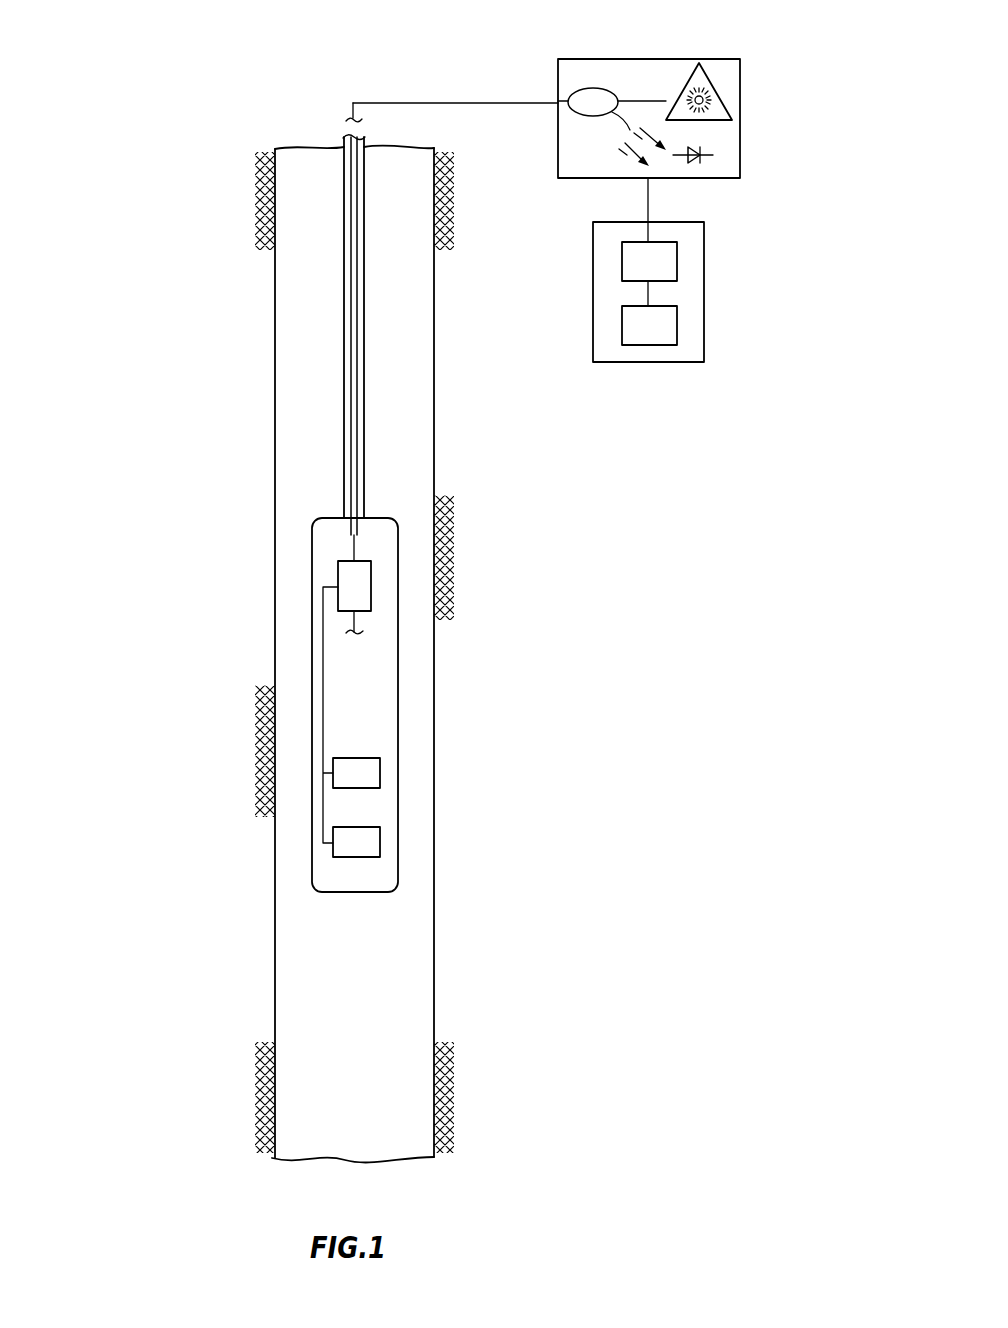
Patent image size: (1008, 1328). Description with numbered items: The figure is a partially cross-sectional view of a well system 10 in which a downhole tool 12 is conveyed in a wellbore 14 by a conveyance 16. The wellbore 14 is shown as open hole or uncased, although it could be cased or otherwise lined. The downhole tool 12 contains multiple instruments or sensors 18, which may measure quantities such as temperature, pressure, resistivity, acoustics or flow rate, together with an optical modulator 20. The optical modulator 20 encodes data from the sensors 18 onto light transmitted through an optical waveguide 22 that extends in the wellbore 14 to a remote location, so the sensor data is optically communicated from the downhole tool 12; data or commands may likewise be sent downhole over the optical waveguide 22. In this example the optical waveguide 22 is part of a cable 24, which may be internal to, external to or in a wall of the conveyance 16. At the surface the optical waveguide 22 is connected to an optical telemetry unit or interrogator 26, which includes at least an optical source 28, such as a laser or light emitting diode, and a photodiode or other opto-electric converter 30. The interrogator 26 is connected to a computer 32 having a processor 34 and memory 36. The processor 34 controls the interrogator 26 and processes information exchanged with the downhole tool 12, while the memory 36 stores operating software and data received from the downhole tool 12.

The system 10 is at (165, 98).
The downhole tool 12 is at (412, 661).
The wellbore 14 is at (277, 1014).
The conveyance 16 is at (344, 288).
The sensors 18 is at (368, 758).
The optical modulator 20 is at (372, 572).
The optical waveguide 22 is at (402, 102).
The cable 24 is at (357, 382).
The interrogator 26 is at (552, 68).
The optical source 28 is at (712, 80).
The opto-electric converter 30 is at (703, 152).
The computer 32 is at (586, 246).
The processor 34 is at (677, 255).
The memory 36 is at (677, 322).